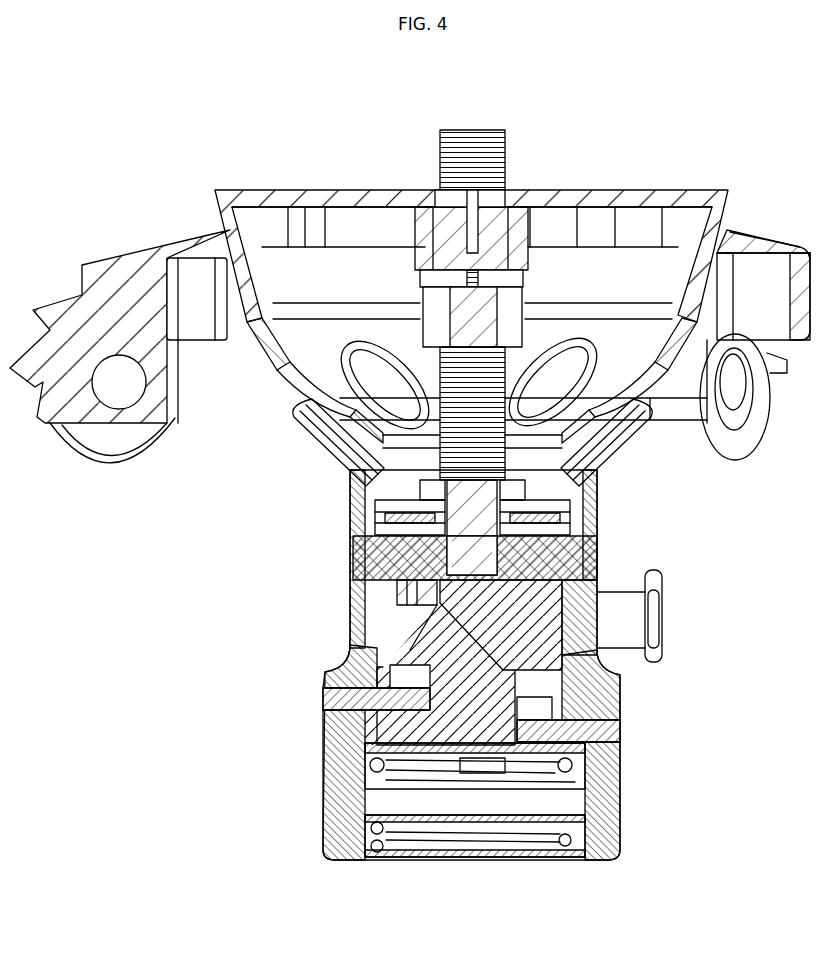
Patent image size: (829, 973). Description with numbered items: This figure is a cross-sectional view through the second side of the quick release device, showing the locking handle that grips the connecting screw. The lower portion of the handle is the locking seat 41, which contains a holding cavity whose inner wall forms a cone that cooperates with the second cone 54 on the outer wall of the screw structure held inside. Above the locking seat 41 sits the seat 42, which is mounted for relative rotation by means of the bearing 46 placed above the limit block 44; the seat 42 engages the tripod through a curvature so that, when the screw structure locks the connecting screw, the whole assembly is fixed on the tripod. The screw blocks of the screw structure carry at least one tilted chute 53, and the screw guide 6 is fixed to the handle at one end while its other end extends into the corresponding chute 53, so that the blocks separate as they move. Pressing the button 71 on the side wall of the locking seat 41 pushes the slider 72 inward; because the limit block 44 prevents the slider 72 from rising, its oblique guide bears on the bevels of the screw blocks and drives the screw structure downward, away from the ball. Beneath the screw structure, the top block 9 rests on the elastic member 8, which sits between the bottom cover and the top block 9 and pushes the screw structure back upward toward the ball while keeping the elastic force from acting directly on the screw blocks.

The seat 42 is at (598, 488).
The bearing 46 is at (358, 502).
The limit block 44 is at (357, 560).
The slider 72 is at (588, 583).
The second cone 54 is at (400, 632).
The chute 53 is at (352, 680).
The screw guide 6 is at (323, 697).
The top block 9 is at (325, 757).
The locking seat 41 is at (615, 812).
The elastic member 8 is at (615, 788).
The button 71 is at (636, 622).